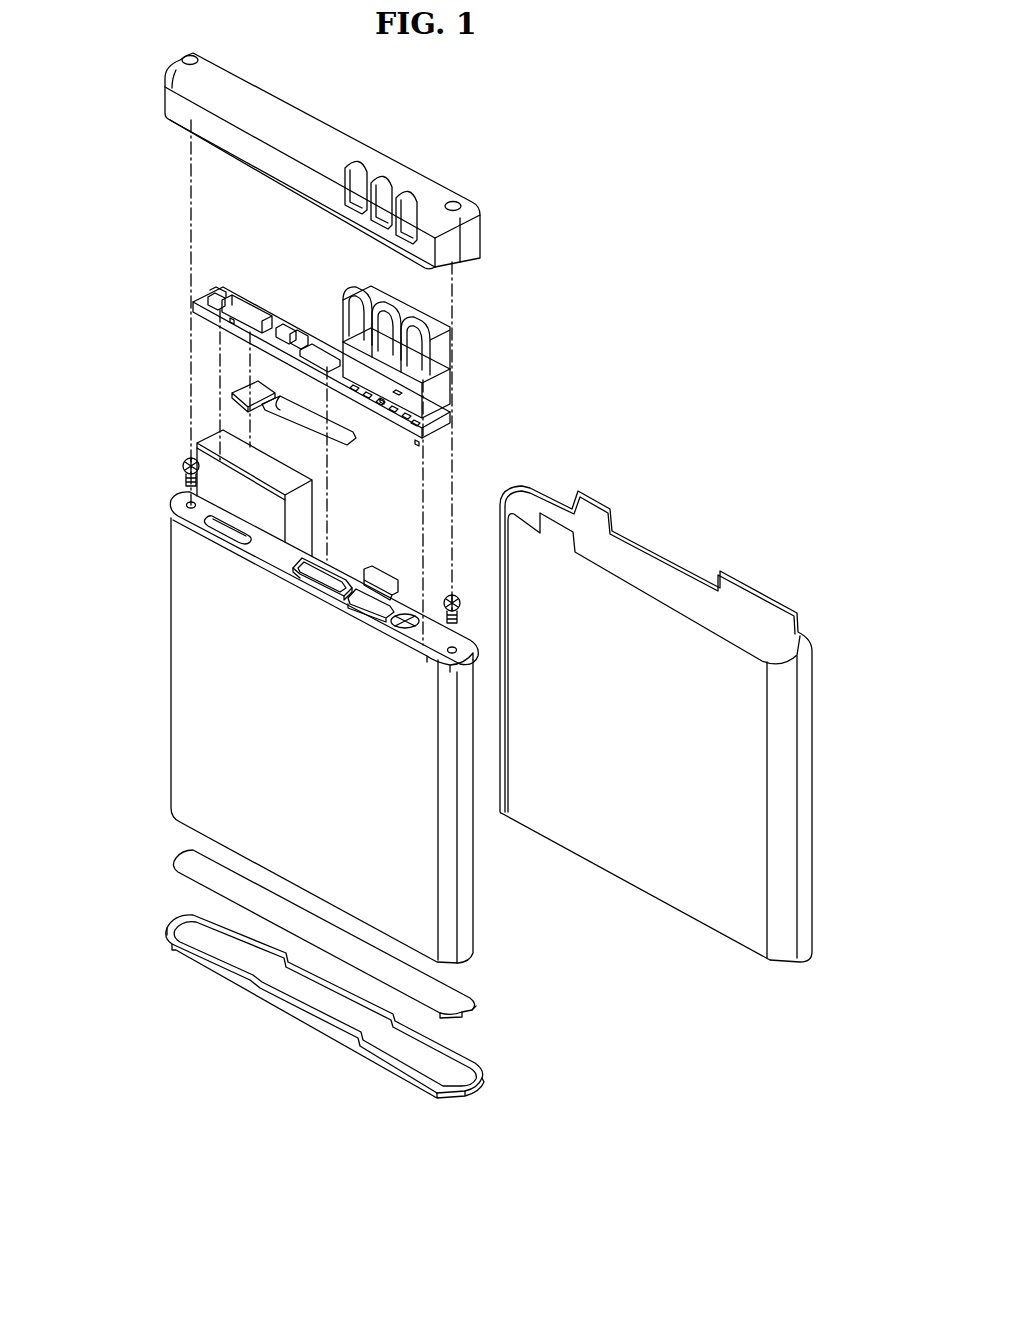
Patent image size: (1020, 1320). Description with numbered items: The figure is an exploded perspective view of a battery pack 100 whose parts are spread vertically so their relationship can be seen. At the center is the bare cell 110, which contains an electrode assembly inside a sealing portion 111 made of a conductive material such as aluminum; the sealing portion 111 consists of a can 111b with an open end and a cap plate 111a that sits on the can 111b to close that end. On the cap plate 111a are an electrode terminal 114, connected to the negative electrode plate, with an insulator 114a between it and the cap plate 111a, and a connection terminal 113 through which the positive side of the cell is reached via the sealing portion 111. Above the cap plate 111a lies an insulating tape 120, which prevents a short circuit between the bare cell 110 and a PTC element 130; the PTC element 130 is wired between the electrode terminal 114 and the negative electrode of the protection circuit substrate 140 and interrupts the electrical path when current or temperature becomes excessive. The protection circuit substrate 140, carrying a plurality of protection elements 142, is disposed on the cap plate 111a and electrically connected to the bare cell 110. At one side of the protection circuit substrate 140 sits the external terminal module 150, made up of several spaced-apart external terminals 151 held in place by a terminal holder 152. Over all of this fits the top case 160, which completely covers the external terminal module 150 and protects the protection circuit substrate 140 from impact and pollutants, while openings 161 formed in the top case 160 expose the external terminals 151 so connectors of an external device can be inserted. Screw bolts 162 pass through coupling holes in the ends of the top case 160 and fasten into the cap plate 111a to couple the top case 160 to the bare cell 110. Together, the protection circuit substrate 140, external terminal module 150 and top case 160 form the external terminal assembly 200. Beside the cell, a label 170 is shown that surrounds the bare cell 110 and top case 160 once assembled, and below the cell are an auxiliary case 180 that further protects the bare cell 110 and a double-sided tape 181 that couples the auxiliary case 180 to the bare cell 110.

The battery pack 100 is at (686, 119).
The bare cell 110 is at (166, 679).
The sealing portion 111 is at (78, 505).
The cap plate 111a is at (180, 502).
The can 111b is at (186, 571).
The connection terminal 113 is at (363, 605).
The electrode terminal 114 is at (330, 565).
The insulator 114a is at (355, 576).
The insulating tape 120 is at (215, 437).
The PTC element 130 is at (238, 385).
The protection circuit substrate 140 is at (440, 400).
The protection elements 142 is at (277, 325).
The external terminal module 150 is at (352, 288).
The external terminals 151 is at (432, 300).
The terminal holder 152 is at (442, 345).
The top case 160 is at (478, 193).
The openings 161 is at (416, 200).
The screw bolts 162 is at (182, 469).
The label 170 is at (628, 865).
The auxiliary case 180 is at (182, 926).
The double-sided tape 181 is at (190, 857).
The external terminal assembly 200 is at (568, 170).